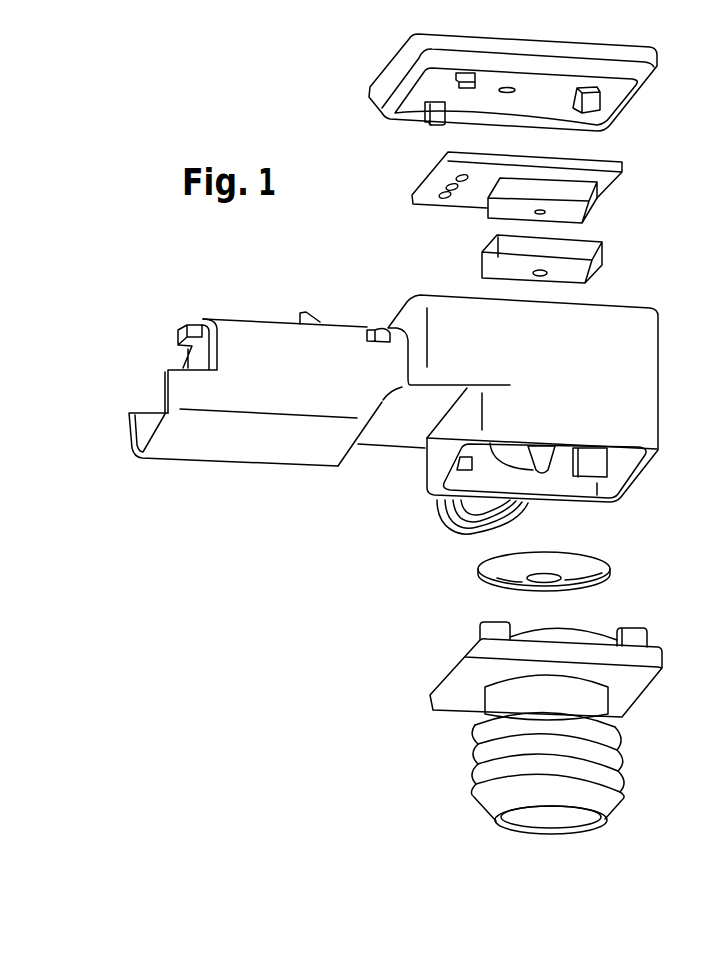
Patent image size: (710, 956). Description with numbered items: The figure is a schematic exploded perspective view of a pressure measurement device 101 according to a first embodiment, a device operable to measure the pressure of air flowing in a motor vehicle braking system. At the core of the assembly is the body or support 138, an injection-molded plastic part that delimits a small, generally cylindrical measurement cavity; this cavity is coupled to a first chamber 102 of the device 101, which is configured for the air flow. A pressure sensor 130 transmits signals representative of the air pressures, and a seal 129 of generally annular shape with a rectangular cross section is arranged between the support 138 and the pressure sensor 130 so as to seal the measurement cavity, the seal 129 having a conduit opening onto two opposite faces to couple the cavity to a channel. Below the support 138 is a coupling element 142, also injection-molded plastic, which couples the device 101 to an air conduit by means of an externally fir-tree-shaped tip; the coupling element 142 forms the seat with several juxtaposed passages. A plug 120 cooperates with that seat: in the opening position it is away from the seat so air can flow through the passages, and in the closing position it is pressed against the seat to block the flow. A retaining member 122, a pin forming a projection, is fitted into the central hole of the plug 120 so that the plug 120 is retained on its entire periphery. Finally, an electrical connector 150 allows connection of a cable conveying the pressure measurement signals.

The pressure measurement device 101 is at (284, 97).
The first chamber 102 is at (516, 828).
The plug 120 is at (592, 581).
The retaining member 122 is at (450, 512).
The seal 129 is at (585, 252).
The pressure sensor 130 is at (245, 318).
The support 138 is at (420, 297).
The coupling element 142 is at (490, 750).
The electrical connector 150 is at (488, 200).